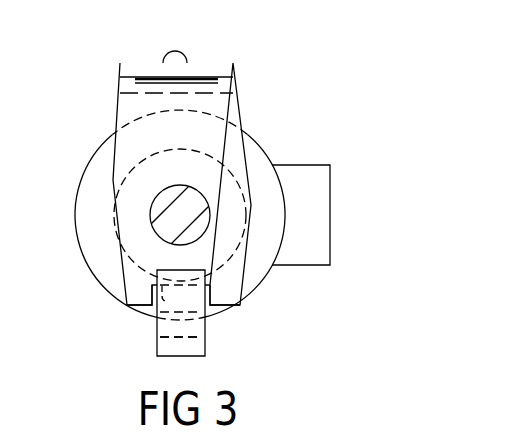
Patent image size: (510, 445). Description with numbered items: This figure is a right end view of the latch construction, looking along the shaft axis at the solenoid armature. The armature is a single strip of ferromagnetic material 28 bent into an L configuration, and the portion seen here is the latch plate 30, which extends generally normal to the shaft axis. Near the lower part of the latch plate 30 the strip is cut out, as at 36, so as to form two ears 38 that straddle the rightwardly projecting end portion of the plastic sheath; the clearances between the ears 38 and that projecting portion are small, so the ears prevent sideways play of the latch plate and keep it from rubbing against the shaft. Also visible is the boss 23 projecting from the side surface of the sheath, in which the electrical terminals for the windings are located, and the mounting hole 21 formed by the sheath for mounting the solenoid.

The strip of ferromagnetic material 28 is at (119, 110).
The latch plate 30 is at (233, 142).
The boss 23 is at (319, 165).
The cut out 36 is at (157, 303).
The ears 38 is at (131, 292).
The mounting hole 21 is at (207, 333).